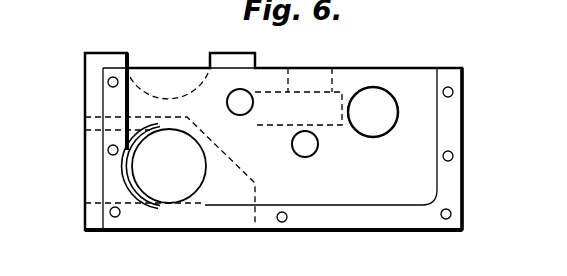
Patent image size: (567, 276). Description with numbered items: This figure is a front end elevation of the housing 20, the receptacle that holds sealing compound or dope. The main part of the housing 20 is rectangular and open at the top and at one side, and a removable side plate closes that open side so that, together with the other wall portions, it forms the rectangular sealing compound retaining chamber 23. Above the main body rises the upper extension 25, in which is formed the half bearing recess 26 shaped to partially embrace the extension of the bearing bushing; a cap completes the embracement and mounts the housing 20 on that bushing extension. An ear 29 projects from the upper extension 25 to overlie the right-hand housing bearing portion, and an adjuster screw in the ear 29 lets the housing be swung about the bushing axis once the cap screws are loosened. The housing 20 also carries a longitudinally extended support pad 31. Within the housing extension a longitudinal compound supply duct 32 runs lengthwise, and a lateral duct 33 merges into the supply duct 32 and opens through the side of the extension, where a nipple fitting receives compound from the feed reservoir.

The housing 20 is at (463, 140).
The sealing compound retaining chamber 23 is at (421, 178).
The upper extension 25 is at (237, 50).
The half bearing recess 26 is at (148, 42).
The ear 29 is at (315, 108).
The support pad 31 is at (302, 80).
The longitudinal compound supply duct 32 is at (141, 170).
The lateral duct 33 is at (96, 141).